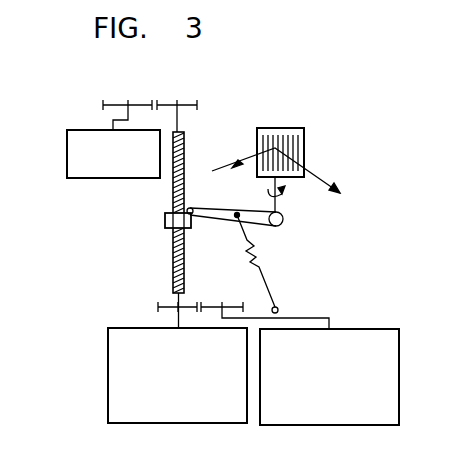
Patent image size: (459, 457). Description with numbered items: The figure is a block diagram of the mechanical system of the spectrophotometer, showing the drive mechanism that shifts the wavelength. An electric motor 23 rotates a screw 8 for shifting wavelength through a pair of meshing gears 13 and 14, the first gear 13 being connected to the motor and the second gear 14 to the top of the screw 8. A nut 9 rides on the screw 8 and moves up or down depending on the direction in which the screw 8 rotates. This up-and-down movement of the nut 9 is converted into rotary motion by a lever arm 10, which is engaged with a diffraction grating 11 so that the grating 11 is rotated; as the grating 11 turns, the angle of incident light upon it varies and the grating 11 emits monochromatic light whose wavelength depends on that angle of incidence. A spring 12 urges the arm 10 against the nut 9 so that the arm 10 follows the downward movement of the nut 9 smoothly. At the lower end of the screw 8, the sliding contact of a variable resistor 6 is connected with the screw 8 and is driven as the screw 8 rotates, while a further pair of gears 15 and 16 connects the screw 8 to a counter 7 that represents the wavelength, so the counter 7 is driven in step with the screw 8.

The electric motor 23 is at (67, 159).
The gear 13 is at (136, 103).
The gear 14 is at (183, 105).
The screw 8 is at (173, 258).
The nut 9 is at (165, 222).
The lever arm 10 is at (271, 226).
The spring 12 is at (257, 260).
The diffraction grating 11 is at (284, 128).
The gear 15 is at (159, 302).
The gear 16 is at (235, 303).
The variable resistor 6 is at (108, 346).
The counter 7 is at (362, 329).